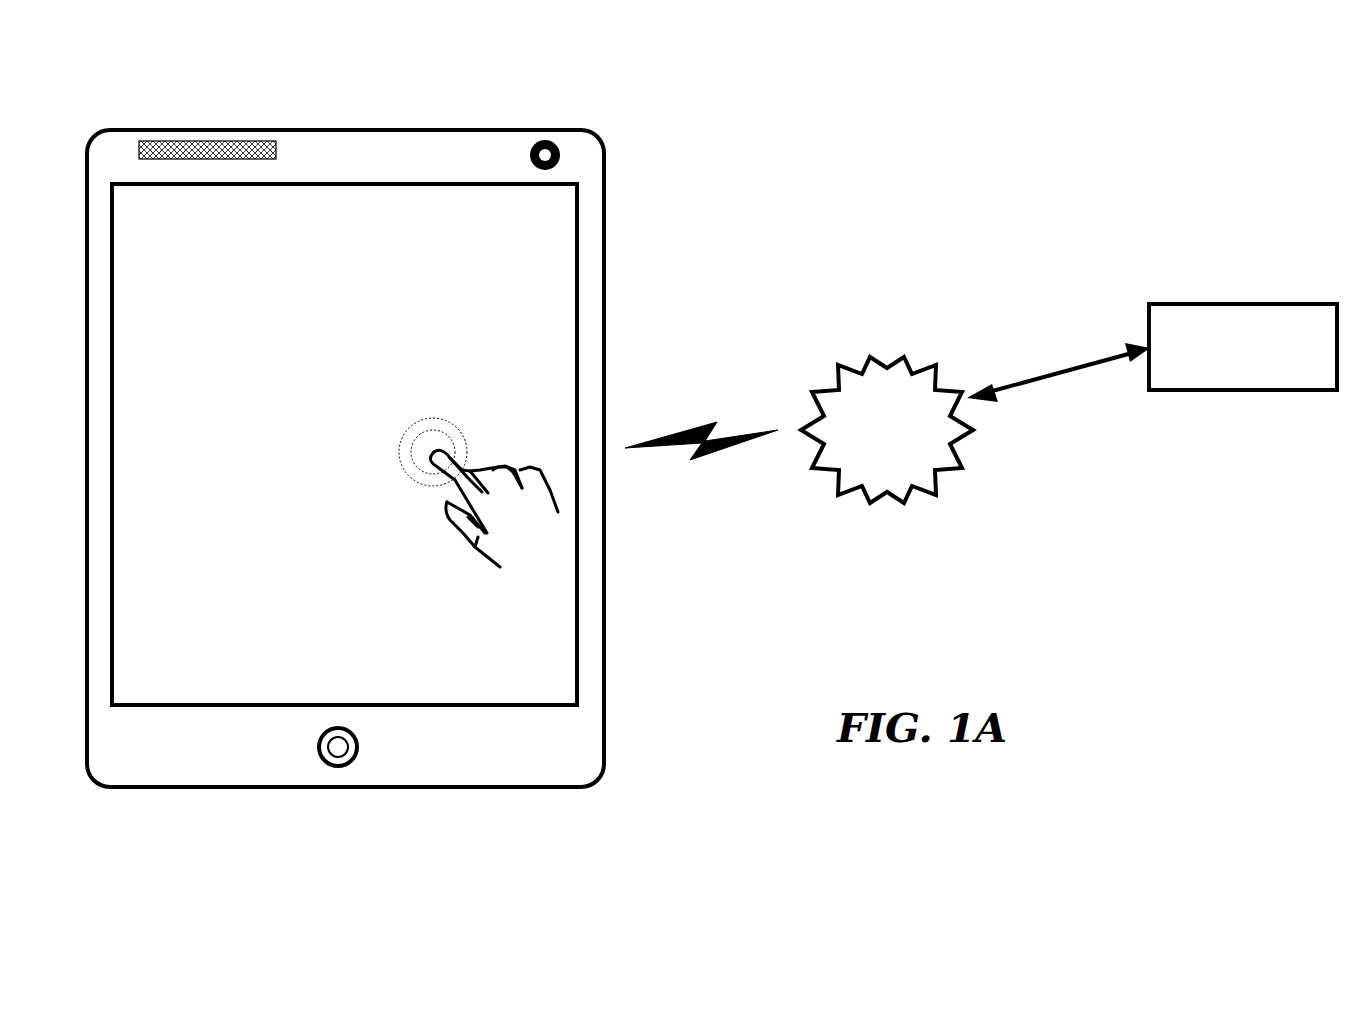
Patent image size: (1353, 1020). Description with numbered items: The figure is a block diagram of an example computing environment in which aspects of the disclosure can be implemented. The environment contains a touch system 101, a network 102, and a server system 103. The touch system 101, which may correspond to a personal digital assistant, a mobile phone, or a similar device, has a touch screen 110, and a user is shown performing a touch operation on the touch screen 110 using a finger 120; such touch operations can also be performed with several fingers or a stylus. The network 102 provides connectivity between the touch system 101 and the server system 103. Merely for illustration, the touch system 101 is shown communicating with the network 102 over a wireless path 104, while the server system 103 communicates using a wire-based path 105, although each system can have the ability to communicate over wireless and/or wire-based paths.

The touch system 101 is at (305, 110).
The touch screen 110 is at (604, 245).
The finger 120 is at (478, 543).
The wireless path 104 is at (695, 415).
The network 102 is at (887, 430).
The server system 103 is at (1243, 347).
The wire-based path 105 is at (1028, 378).